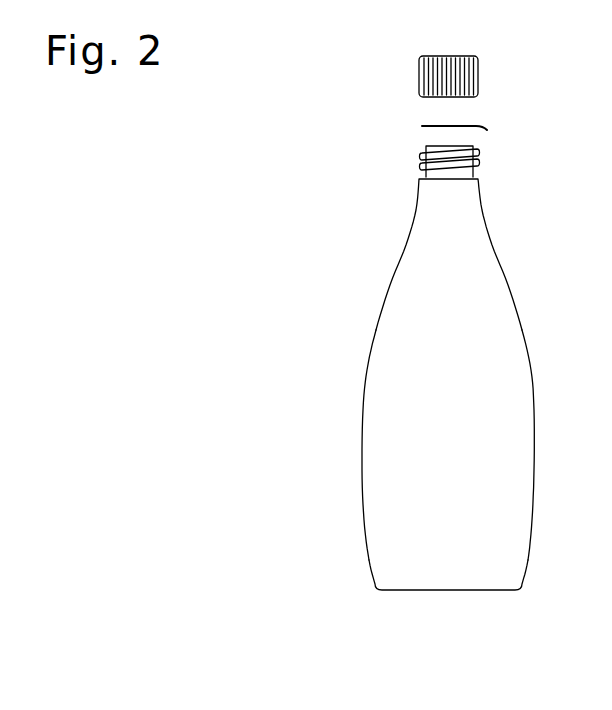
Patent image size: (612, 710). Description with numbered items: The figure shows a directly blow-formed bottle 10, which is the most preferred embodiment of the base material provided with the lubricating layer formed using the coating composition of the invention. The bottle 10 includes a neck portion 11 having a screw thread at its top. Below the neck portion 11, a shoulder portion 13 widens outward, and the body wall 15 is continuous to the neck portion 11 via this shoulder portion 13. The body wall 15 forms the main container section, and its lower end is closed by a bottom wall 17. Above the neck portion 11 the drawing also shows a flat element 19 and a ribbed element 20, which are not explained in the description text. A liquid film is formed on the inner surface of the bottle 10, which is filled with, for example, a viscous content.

The bottle 10 is at (429, 389).
The neck portion 11 is at (492, 164).
The shoulder portion 13 is at (515, 270).
The body wall 15 is at (523, 403).
The bottom wall 17 is at (491, 590).
The sealing member 19 is at (430, 124).
The cap 20 is at (479, 73).